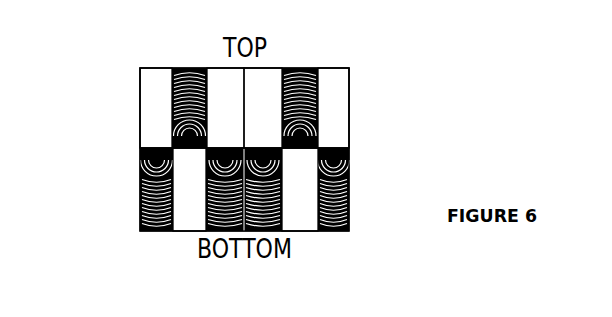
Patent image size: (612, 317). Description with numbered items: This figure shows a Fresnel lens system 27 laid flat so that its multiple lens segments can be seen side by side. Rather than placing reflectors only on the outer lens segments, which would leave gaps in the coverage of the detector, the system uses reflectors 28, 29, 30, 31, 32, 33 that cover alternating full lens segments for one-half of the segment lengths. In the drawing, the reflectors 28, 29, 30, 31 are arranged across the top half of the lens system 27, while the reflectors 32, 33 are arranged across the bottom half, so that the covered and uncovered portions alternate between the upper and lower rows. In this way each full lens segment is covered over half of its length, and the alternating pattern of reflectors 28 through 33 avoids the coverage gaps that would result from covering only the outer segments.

The Fresnel lens system 27 is at (124, 193).
The reflector 28 is at (147, 100).
The reflector 29 is at (227, 78).
The reflector 30 is at (265, 77).
The reflector 31 is at (337, 110).
The reflector 32 is at (192, 222).
The reflector 33 is at (300, 222).